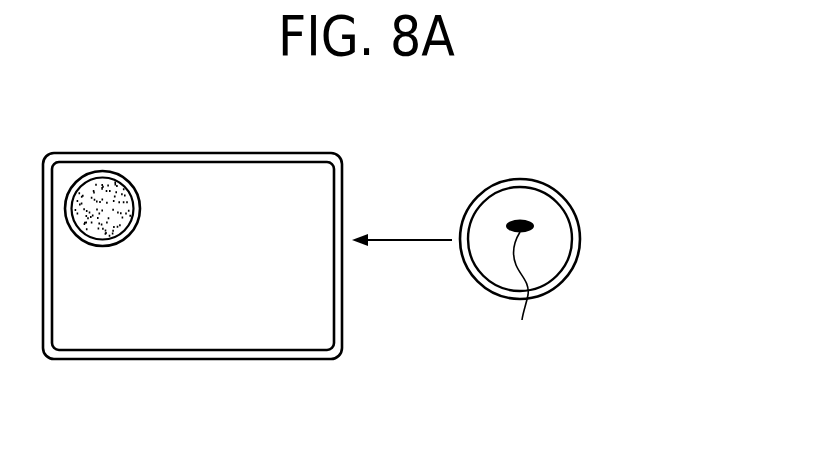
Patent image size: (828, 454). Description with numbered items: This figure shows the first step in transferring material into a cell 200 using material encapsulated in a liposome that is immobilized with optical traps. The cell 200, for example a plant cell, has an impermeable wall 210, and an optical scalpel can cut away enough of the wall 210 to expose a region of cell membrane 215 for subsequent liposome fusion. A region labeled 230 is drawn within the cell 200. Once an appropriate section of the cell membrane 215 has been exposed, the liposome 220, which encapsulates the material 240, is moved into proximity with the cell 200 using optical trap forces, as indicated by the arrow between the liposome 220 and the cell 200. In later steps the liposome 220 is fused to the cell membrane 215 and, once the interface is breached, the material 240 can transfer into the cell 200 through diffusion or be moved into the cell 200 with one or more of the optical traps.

The cell 200 is at (245, 242).
The impermeable wall 210 is at (345, 181).
The cell membrane 215 is at (334, 354).
The liposome 220 is at (586, 260).
The encapsulated particle region 230 is at (266, 209).
The material 240 is at (519, 306).